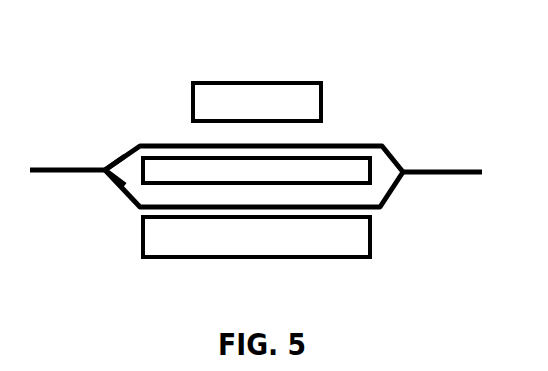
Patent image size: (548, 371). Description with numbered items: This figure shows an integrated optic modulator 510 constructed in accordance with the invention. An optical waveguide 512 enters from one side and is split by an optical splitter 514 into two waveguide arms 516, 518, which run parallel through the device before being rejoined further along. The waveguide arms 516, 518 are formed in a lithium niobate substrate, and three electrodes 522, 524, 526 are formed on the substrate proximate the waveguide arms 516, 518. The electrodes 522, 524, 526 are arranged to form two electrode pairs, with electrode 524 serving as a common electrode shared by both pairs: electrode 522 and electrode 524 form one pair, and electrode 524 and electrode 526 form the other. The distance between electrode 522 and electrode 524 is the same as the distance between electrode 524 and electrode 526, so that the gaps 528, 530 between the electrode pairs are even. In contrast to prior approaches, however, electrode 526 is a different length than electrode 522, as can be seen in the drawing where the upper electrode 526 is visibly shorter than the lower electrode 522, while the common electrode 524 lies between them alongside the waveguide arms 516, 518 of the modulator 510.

The integrated optic modulator 510 is at (117, 58).
The optical waveguide 512 is at (78, 173).
The optical splitter 514 is at (106, 162).
The waveguide arm 516 is at (397, 155).
The waveguide arm 518 is at (390, 190).
The electrode 522 is at (332, 242).
The electrode 524 is at (318, 177).
The electrode 526 is at (295, 82).
The gap 528 is at (127, 218).
The gap 530 is at (333, 131).